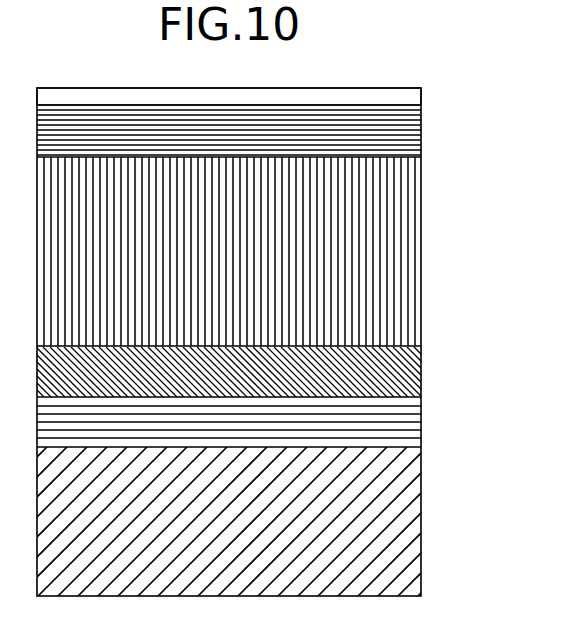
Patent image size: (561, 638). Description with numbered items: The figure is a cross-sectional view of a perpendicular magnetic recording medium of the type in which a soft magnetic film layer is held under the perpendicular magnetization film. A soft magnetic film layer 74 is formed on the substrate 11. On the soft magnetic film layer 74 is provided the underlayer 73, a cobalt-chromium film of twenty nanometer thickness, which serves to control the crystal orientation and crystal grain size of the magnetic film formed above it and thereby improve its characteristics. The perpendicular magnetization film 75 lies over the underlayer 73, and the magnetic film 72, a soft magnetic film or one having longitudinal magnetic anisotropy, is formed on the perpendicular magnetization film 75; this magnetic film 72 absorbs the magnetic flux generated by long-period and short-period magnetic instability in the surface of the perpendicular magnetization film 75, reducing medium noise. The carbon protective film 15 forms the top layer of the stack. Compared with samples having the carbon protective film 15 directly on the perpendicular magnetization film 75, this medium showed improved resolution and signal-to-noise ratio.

The substrate 11 is at (410, 527).
The carbon protective film 15 is at (410, 99).
The magnetic film 72 is at (410, 133).
The underlayer 73 is at (410, 374).
The soft magnetic film layer 74 is at (410, 428).
The perpendicular magnetization film 75 is at (410, 229).